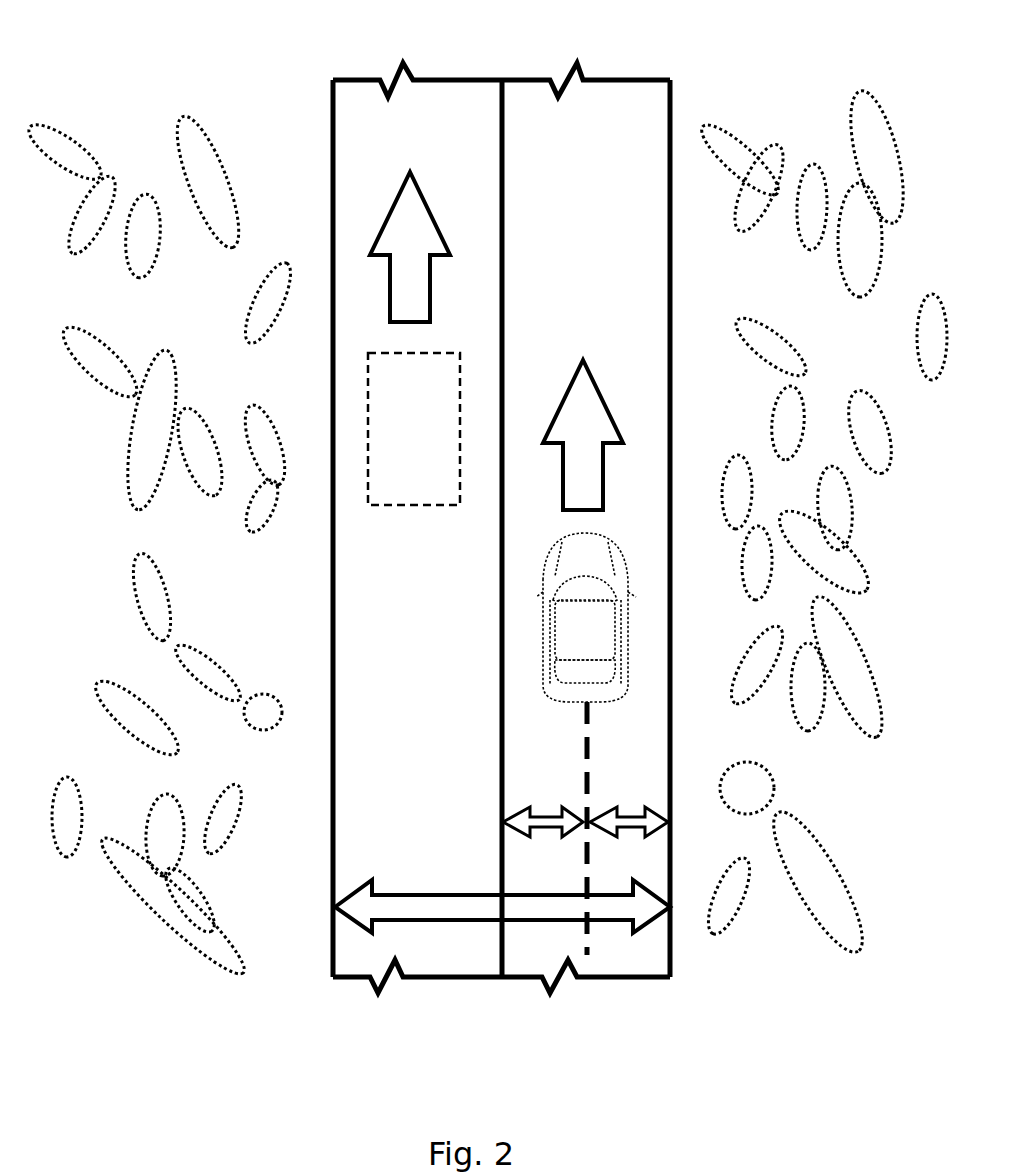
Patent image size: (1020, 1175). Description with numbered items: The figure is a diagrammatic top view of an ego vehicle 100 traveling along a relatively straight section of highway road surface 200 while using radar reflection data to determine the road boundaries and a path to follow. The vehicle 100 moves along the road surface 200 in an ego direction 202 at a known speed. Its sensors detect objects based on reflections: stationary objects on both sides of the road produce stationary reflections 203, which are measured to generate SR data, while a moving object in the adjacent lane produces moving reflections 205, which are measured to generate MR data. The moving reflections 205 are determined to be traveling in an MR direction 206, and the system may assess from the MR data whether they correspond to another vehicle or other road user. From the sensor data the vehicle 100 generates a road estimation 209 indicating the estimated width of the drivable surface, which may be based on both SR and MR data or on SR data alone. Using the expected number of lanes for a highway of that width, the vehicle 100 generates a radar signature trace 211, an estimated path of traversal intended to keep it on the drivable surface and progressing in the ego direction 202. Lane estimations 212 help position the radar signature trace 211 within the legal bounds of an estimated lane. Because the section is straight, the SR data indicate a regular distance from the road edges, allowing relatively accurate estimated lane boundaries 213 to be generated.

The vehicle 100 is at (603, 640).
The road surface 200 is at (519, 152).
The ego direction 202 is at (601, 436).
The stationary reflections 203 is at (318, 90).
The moving reflections 205 is at (429, 442).
The MR direction 206 is at (428, 249).
The road estimation 209 is at (435, 903).
The radar signature trace 211 is at (589, 742).
The lane estimations 212 is at (547, 827).
The estimated lane boundaries 213 is at (503, 229).